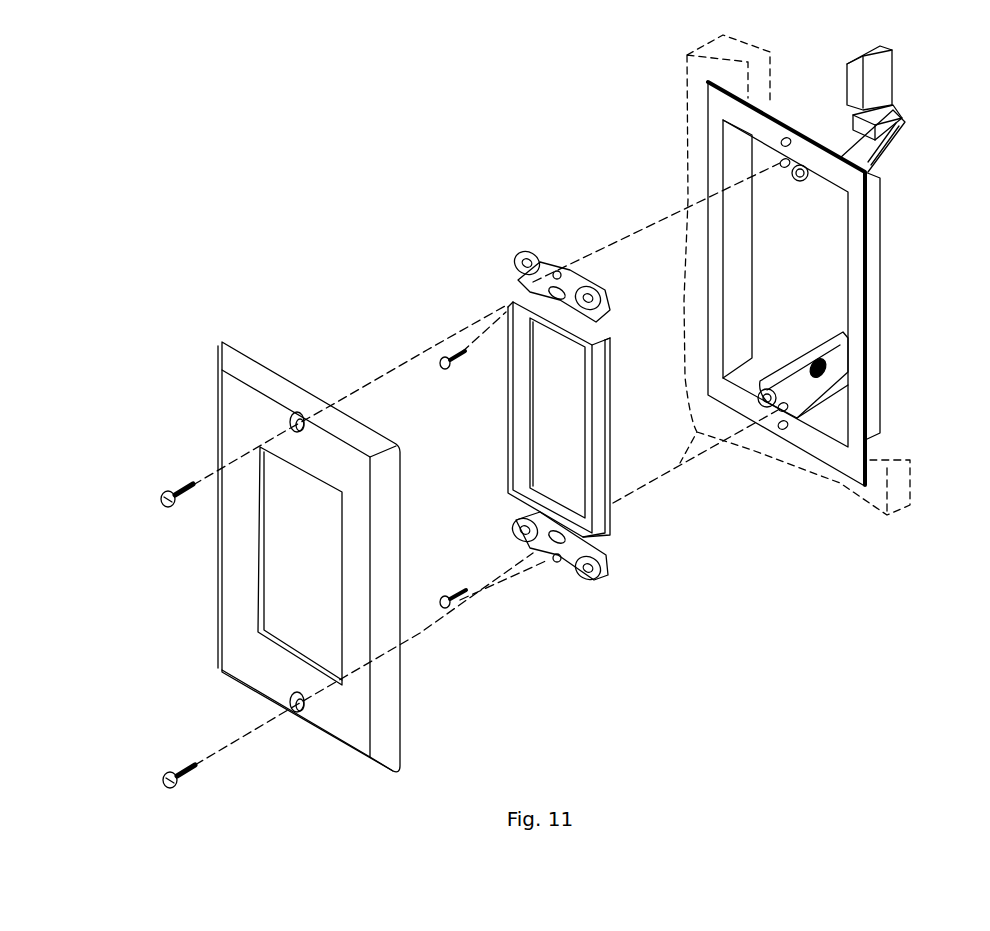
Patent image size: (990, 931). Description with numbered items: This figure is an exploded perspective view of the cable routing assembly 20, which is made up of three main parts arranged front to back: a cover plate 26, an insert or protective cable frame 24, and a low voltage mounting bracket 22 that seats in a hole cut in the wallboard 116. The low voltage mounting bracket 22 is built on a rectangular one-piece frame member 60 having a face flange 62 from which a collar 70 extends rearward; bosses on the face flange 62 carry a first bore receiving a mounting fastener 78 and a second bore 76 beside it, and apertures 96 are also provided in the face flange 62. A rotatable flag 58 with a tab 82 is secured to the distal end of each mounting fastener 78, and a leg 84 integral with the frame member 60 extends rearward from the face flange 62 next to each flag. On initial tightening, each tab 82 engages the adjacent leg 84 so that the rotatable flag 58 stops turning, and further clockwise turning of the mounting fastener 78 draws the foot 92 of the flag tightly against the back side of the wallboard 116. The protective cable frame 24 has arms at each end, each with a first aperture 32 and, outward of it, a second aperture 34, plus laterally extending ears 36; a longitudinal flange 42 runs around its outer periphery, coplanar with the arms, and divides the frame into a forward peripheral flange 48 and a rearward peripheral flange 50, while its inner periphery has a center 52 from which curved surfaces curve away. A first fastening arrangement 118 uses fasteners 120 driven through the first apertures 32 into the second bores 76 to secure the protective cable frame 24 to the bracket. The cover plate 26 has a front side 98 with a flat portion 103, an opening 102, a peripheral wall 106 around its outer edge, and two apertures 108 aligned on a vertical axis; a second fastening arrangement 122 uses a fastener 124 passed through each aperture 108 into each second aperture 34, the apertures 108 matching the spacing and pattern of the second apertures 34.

The cable routing assembly 20 is at (203, 140).
The low voltage mounting bracket 22 is at (662, 138).
The protective cable frame 24 is at (445, 288).
The cover plate 26 is at (170, 386).
The first aperture 32 is at (528, 283).
The second aperture 34 is at (556, 282).
The ears 36 is at (518, 256).
The longitudinal flange 42 is at (604, 437).
The forward peripheral flange 48 is at (586, 442).
The rearward peripheral flange 50 is at (608, 400).
The center 52 is at (524, 378).
The rotatable flag 58 is at (898, 78).
The frame member 60 is at (840, 482).
The face flange 62 is at (852, 295).
The collar 70 is at (880, 257).
The second bore 76 is at (778, 410).
The mounting fastener 78 is at (796, 180).
The tab 82 is at (902, 128).
The leg 84 is at (868, 155).
The foot 92 is at (846, 83).
The apertures 96 is at (785, 430).
The front side 98 is at (242, 544).
The opening 102 is at (280, 584).
The flat portion 103 is at (232, 431).
The peripheral wall 106 is at (392, 694).
The apertures 108 is at (303, 432).
The wallboard 116 is at (736, 48).
The first fastening arrangement 118 is at (446, 566).
The fasteners 120 is at (447, 372).
The second fastening arrangement 122 is at (140, 500).
The fastener 124 is at (177, 490).